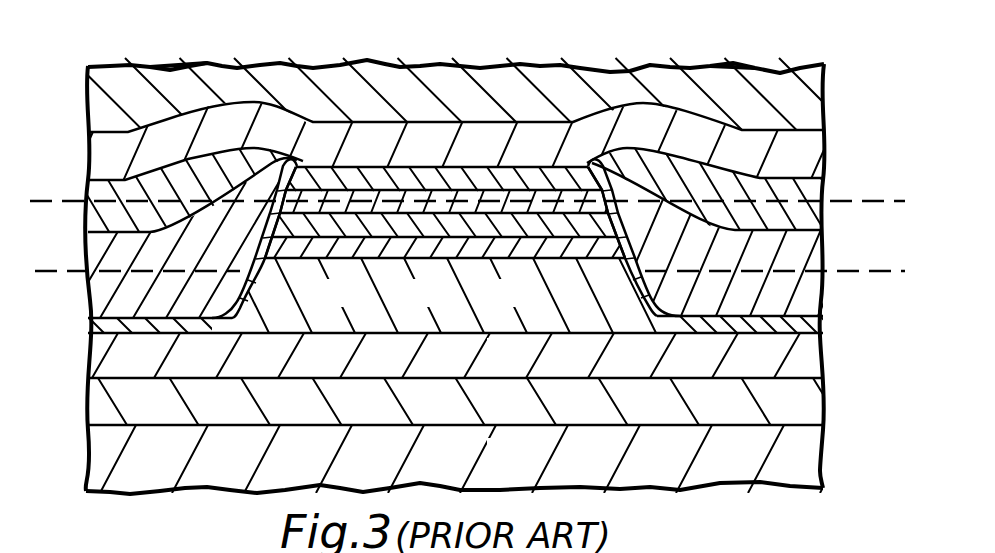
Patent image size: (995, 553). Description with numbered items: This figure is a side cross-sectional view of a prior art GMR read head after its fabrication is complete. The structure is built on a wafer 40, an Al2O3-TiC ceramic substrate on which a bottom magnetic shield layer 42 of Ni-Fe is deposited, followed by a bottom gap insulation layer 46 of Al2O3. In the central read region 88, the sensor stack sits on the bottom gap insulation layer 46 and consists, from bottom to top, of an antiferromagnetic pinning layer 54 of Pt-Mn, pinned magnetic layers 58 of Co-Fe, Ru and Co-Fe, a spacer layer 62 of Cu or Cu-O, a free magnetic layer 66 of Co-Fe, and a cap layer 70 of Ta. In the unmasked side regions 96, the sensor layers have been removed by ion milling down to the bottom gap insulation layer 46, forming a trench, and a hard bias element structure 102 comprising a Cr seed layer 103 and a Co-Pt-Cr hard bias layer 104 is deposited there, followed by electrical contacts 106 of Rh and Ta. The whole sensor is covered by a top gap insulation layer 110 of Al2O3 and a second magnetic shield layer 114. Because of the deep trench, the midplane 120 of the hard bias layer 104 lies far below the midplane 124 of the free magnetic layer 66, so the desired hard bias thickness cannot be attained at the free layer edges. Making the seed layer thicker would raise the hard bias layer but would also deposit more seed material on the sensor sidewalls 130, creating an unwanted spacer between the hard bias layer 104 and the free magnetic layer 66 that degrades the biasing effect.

The wafer 40 is at (526, 469).
The bottom magnetic shield layer 42 is at (526, 414).
The bottom gap insulation layer 46 is at (526, 369).
The antiferromagnetic pinning layer 54 is at (520, 312).
The pinned magnetic layers 58 is at (435, 246).
The spacer layer 62 is at (355, 227).
The free magnetic layer 66 is at (412, 188).
The cap layer 70 is at (482, 181).
The central read region 88 is at (438, 56).
The unmasked side regions 96 is at (183, 58).
The hard bias element structure 102 is at (100, 248).
The Cr seed layer 103 is at (88, 333).
The hard bias layer 104 is at (88, 318).
The electrical contacts 106 is at (105, 183).
The top gap insulation layer 110 is at (370, 140).
The second magnetic shield layer 114 is at (549, 90).
The midplane of the hard bias layer 120 is at (66, 276).
The midplane of the free magnetic layer 124 is at (62, 200).
The sensor sidewalls 130 is at (263, 153).